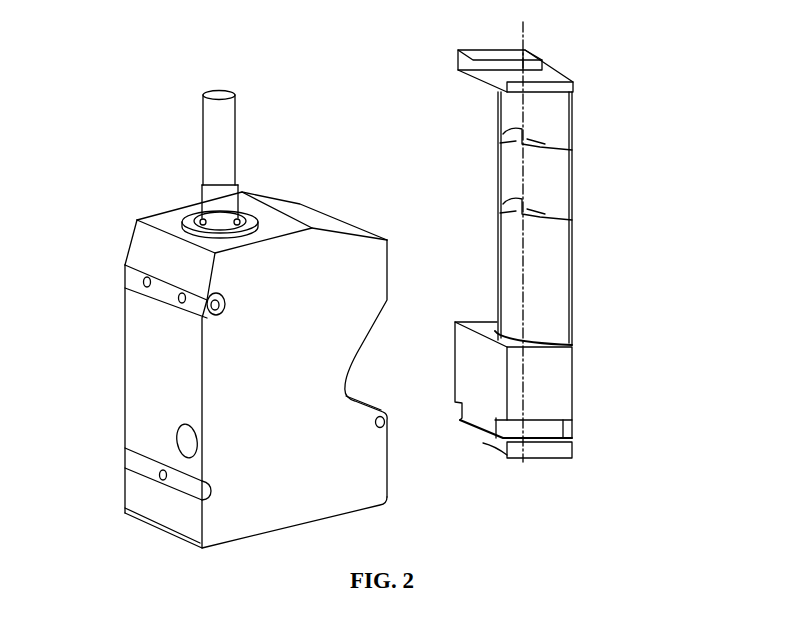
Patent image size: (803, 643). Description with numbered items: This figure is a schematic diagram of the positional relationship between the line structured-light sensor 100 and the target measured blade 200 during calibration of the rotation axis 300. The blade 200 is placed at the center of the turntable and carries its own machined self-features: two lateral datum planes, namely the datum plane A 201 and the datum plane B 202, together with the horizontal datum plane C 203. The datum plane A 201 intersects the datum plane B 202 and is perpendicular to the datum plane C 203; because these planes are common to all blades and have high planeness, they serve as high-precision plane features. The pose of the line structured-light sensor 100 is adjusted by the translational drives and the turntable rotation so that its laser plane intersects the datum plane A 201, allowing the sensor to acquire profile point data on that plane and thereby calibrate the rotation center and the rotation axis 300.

The line structured-light sensor 100 is at (220, 120).
The blade 200 is at (465, 67).
The rotation axis 300 is at (523, 170).
The datum plane A 201 is at (483, 368).
The datum plane B 202 is at (547, 393).
The datum plane C 203 is at (537, 442).